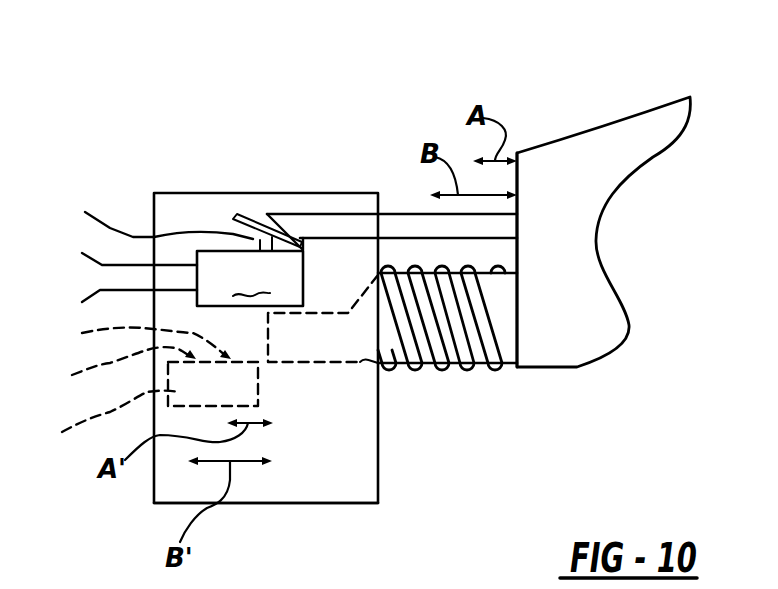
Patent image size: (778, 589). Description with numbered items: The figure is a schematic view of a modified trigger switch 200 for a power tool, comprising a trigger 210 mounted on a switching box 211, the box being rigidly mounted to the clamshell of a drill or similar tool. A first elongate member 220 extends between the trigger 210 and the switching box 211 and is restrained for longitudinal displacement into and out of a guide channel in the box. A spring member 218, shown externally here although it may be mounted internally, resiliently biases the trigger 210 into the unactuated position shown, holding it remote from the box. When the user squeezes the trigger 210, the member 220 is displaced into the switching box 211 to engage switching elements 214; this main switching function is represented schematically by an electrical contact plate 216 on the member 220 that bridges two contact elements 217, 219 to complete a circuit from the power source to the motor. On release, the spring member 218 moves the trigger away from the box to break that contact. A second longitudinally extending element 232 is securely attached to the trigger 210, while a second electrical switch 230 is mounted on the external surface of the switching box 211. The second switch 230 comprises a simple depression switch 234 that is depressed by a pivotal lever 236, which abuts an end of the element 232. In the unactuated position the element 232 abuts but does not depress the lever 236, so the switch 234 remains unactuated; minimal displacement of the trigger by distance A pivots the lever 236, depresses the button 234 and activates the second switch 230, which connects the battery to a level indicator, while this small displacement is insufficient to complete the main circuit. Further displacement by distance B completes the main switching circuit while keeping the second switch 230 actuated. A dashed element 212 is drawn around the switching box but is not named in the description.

The trigger switch 200 is at (527, 98).
The trigger 210 is at (627, 135).
The switching box 211 is at (362, 503).
The housing 212 is at (193, 210).
The switching elements 214 is at (142, 406).
The electrical contact plate 216 is at (327, 362).
The contact element 217 is at (115, 369).
The spring member 218 is at (442, 363).
The contact element 219 is at (138, 337).
The first elongate member 220 is at (508, 333).
The second electrical switch 230 is at (250, 278).
The second longitudinally extending element 232 is at (362, 225).
The depression switch 234 is at (159, 238).
The pivotal lever 236 is at (248, 215).